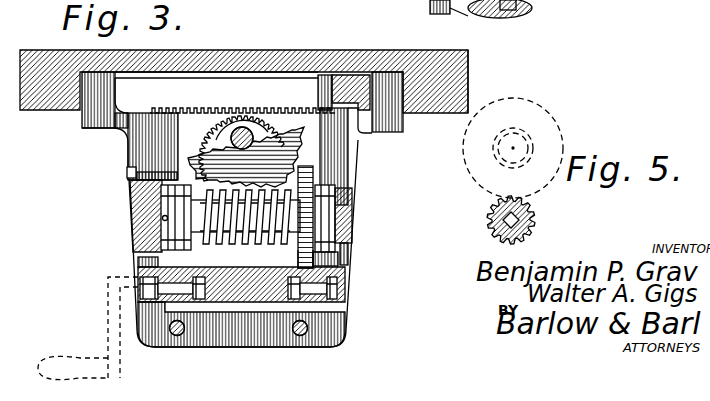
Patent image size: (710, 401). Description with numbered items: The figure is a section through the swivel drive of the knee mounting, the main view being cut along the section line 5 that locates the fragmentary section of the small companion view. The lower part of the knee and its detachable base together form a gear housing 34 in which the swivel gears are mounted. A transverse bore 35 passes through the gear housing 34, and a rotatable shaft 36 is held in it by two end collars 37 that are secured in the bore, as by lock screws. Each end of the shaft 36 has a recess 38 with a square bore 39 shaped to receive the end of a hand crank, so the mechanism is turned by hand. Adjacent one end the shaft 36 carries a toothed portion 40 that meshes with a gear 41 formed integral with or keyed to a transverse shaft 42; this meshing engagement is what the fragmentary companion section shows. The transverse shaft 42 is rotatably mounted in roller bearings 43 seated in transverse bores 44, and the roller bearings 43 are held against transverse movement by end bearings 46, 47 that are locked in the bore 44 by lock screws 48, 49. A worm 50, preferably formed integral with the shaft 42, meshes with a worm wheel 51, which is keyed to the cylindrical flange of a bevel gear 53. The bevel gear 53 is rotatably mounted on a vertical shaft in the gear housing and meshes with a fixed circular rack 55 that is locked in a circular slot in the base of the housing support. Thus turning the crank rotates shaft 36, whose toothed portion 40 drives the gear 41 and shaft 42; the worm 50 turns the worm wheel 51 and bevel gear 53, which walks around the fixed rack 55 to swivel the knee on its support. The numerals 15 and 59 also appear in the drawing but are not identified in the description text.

In FIG. 3, the section line 5— 5 is at (306, 168).
In FIG. 3, the base plate 15 is at (468, 91).
In FIG. 3, the gear housing 34 is at (287, 253).
In FIG. 3, the transverse bore 35 is at (342, 270).
In FIG. 3, the rotatable shaft 36 is at (262, 295).
In FIG. 3, the end collar 37 is at (337, 315).
In FIG. 3, the recess 38 is at (203, 297).
In FIG. 3, the square bore 39 is at (185, 292).
In FIG. 3, the toothed portion 40 is at (307, 312).
In FIG. 5, the toothed portion 40 is at (497, 215).
In FIG. 5, the gear 41 is at (550, 132).
In FIG. 3, the transverse shaft 42 is at (198, 217).
In FIG. 3, the roller bearing 43 is at (180, 208).
In FIG. 3, the transverse bore 44 is at (325, 182).
In FIG. 3, the end bearing 46 is at (130, 197).
In FIG. 3, the end bearing 47 is at (355, 200).
In FIG. 3, the lock screw 48 is at (127, 172).
In FIG. 3, the lock screw 49 is at (350, 251).
In FIG. 3, the worm 50 is at (245, 228).
In FIG. 3, the worm wheel 51 is at (207, 152).
In FIG. 3, the bevel gear 53 is at (248, 112).
In FIG. 3, the fixed circular rack 55 is at (305, 88).
In FIG. 5, the sprocket hub 59 is at (503, 232).